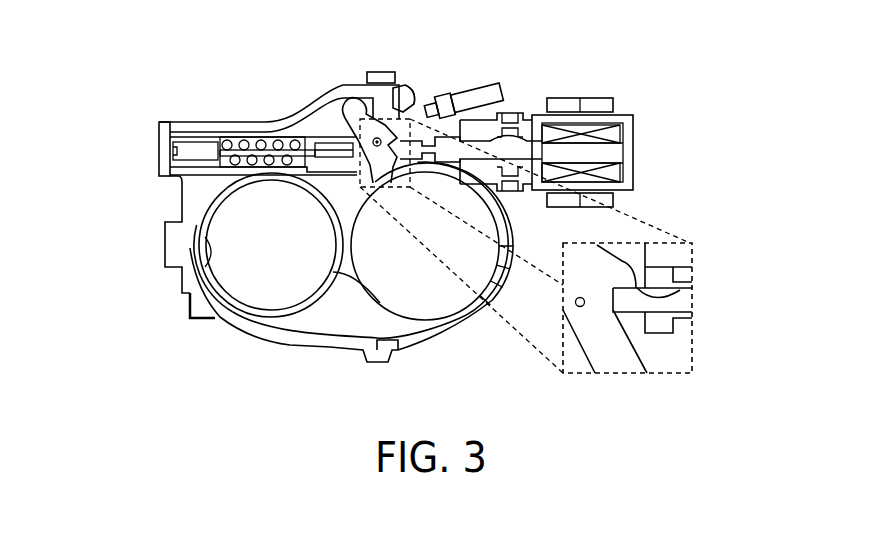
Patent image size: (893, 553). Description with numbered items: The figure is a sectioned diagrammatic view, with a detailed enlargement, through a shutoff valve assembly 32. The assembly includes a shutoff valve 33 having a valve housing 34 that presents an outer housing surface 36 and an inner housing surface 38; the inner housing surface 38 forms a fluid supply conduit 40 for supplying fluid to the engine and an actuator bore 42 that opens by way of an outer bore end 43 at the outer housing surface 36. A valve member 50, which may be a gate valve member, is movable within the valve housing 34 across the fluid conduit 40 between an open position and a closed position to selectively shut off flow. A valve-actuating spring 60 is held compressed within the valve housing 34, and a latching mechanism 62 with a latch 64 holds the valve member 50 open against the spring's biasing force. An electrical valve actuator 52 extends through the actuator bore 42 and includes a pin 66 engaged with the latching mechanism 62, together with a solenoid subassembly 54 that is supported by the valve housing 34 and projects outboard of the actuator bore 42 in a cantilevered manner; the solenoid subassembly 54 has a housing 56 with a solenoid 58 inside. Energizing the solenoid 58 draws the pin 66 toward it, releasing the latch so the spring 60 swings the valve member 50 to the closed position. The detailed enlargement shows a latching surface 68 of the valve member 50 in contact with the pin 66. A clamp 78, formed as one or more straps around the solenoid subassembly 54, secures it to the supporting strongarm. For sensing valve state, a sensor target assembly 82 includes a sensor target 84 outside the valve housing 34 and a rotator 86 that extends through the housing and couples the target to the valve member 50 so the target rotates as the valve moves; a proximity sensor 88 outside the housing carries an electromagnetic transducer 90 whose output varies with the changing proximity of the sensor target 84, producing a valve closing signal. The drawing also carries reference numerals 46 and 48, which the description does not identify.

The shutoff valve assembly 32 is at (683, 100).
The shutoff valve 33 is at (226, 106).
The valve housing 34 is at (200, 320).
The outer housing surface 36 is at (243, 347).
The inner housing surface 38 is at (210, 247).
The fluid supply conduit 40 is at (285, 256).
The actuator bore 42 is at (437, 168).
The outer bore end 43 is at (520, 143).
The belt lower span 46 is at (447, 334).
The stop 48 is at (391, 66).
The valve member 50 is at (453, 290).
The electrical valve actuator 52 is at (612, 120).
The solenoid subassembly 54 is at (634, 183).
The housing 56 is at (624, 161).
The solenoid 58 is at (612, 156).
The valve-actuating spring 60 is at (268, 138).
The latching mechanism 62 is at (668, 292).
The latch 64 is at (620, 255).
The pin 66 is at (680, 305).
The latching surface 68 is at (657, 299).
The clamp 78 is at (590, 92).
The sensor target assembly 82 is at (404, 80).
The sensor target 84 is at (410, 88).
The rotator 86 is at (343, 117).
The proximity sensor 88 is at (464, 89).
The electromagnetic transducer 90 is at (432, 100).